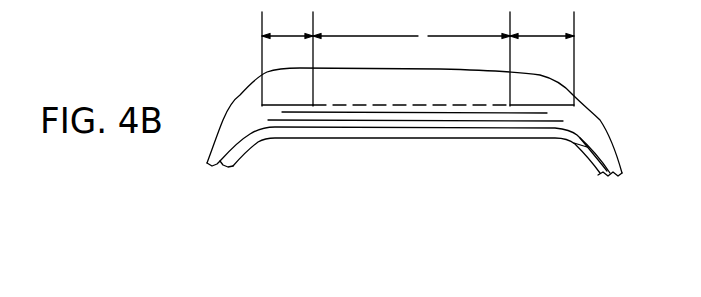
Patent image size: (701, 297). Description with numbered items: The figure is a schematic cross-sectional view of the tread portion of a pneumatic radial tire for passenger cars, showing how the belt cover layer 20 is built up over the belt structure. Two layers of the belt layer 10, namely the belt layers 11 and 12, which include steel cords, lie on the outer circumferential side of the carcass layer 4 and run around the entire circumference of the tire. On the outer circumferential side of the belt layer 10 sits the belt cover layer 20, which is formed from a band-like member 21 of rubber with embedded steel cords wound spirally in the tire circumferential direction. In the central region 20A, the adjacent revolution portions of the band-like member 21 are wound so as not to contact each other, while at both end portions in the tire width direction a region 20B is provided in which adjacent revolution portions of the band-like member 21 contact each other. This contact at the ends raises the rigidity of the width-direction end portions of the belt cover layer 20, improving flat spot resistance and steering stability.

The belt cover layer 20 is at (455, 94).
The region where the band-like member is wound so as not to contact 20A is at (411, 59).
The region where adjacent revolution portions contact or overlap 20B is at (418, 59).
The band-like member 21 is at (395, 104).
The belt layer 10 is at (442, 202).
The belt layer 11 is at (435, 124).
The belt layer 12 is at (397, 115).
The carcass layer 4 is at (575, 144).